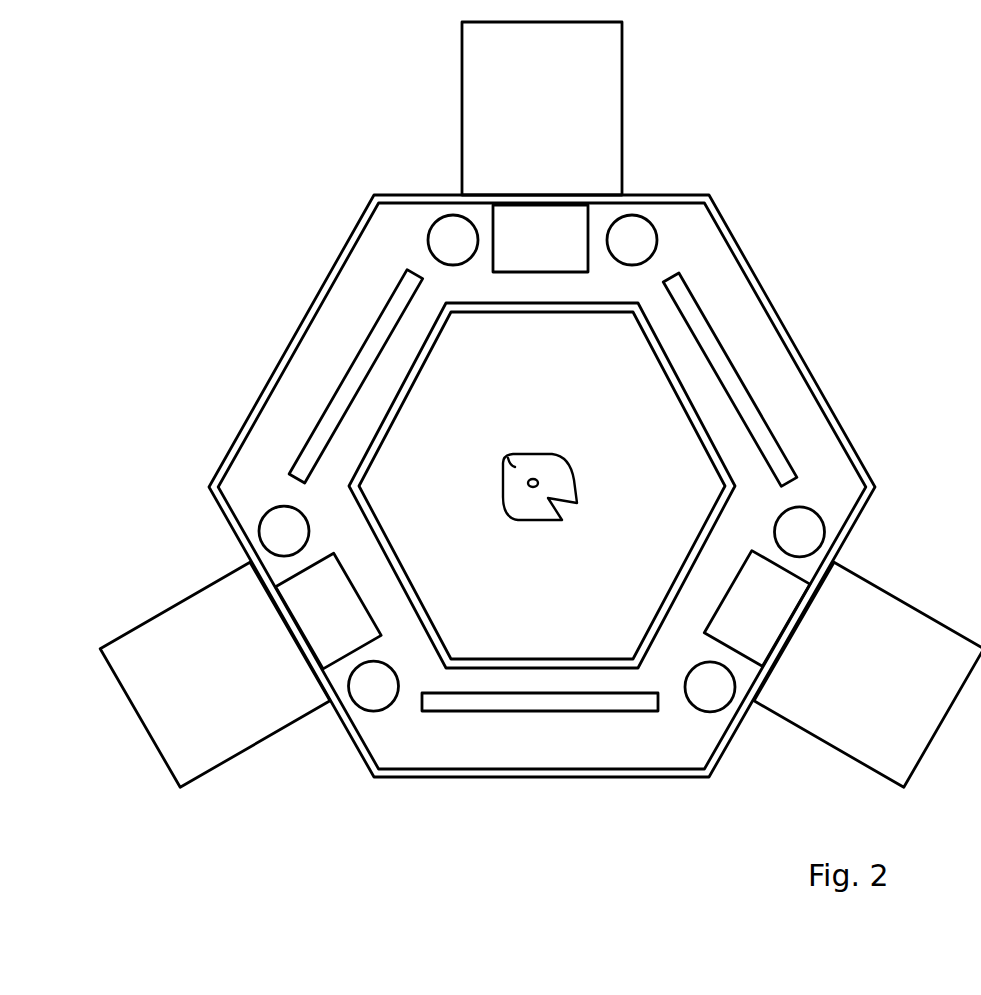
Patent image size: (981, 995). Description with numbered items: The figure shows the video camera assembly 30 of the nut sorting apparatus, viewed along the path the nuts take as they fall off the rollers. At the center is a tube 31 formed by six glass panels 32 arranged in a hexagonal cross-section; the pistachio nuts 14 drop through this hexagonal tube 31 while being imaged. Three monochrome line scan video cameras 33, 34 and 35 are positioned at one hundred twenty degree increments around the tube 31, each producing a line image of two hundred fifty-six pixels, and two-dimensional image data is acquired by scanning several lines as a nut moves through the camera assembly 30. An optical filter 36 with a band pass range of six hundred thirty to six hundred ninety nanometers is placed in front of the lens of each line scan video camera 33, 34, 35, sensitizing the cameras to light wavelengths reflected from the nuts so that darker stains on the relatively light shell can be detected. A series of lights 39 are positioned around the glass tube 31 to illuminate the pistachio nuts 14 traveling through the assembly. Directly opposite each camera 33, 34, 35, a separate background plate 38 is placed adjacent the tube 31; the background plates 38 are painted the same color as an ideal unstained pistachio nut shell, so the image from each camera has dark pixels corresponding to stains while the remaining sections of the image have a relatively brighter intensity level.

The pistachio nut 14 is at (552, 478).
The video camera assembly 30 is at (803, 203).
The tube 31 is at (542, 485).
The glass panel 32 is at (606, 315).
The line scan video camera 33 is at (590, 100).
The line scan video camera 34 is at (890, 605).
The line scan video camera 35 is at (182, 610).
The optical filter 36 is at (515, 235).
The background plate 38 is at (362, 355).
The light 39 is at (632, 237).